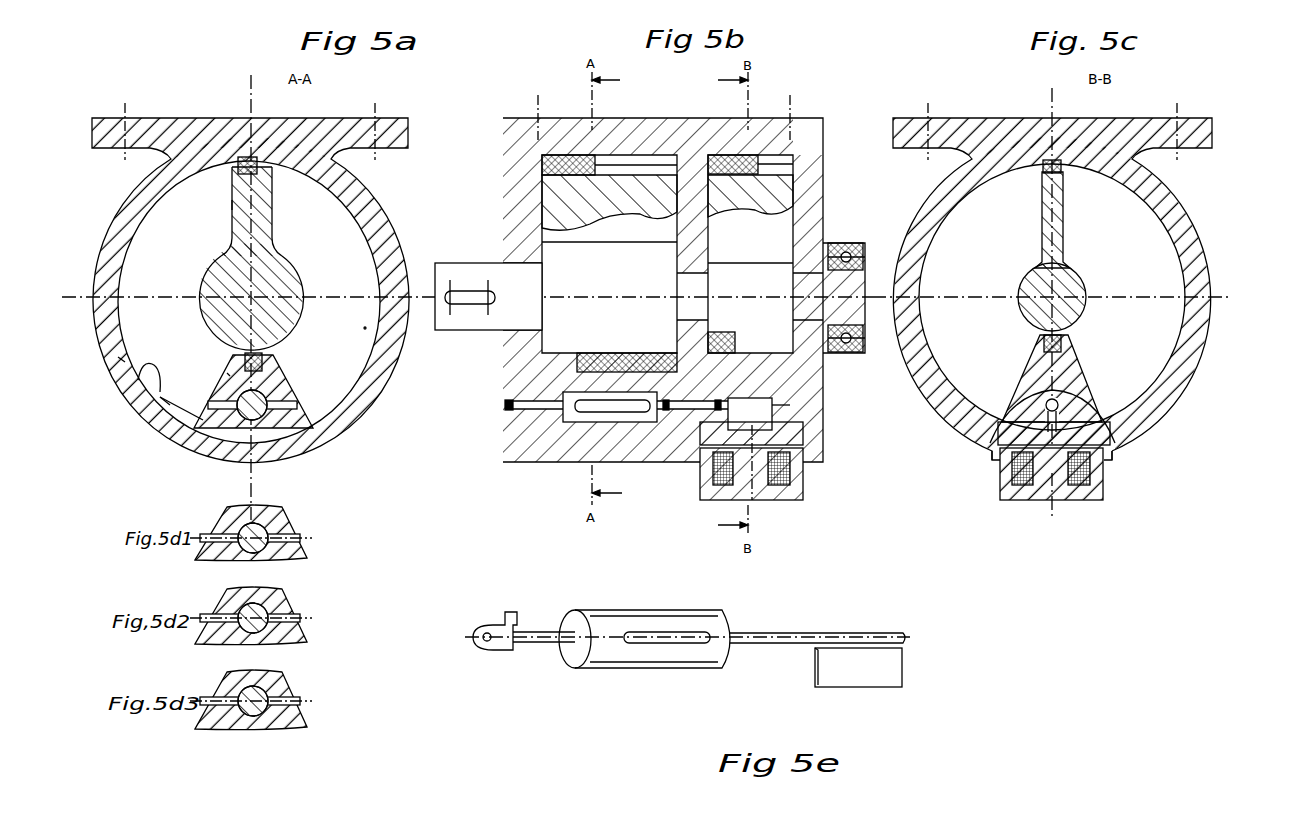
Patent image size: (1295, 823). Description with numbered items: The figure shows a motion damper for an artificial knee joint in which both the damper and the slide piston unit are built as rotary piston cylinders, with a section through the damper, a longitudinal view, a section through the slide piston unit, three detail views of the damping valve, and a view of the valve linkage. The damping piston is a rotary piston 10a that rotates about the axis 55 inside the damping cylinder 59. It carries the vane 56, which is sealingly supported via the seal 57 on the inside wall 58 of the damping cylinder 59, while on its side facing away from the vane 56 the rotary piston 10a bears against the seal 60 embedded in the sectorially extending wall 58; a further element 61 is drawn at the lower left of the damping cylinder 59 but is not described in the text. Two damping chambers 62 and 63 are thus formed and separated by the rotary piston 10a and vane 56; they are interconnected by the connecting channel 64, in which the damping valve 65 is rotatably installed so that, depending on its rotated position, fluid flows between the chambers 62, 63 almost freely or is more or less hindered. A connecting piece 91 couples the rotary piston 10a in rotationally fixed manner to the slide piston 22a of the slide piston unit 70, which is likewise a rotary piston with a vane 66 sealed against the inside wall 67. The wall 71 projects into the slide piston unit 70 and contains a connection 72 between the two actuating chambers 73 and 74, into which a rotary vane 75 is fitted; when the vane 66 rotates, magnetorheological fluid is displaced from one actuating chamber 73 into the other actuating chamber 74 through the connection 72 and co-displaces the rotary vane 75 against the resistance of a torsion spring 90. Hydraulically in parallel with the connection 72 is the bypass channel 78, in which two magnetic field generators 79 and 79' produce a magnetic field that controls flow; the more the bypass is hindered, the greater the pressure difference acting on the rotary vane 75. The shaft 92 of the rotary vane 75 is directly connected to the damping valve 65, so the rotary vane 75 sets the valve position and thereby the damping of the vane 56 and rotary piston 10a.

In FIG. 5A, the rotary piston 10a is at (300, 272).
In FIG. 5A, the axis 55 is at (275, 365).
In FIG. 5A, the vane 56 is at (233, 205).
In FIG. 5A, the seal 57 is at (240, 160).
In FIG. 5A, the inside wall 58 is at (160, 398).
In FIG. 5A, the damping cylinder 59 is at (118, 357).
In FIG. 5A, the seal 60 is at (262, 372).
In FIG. 5A, the inlet channel 61 is at (227, 373).
In FIG. 5A, the damping chamber 62 is at (150, 243).
In FIG. 5A, the damping chamber 63 is at (365, 328).
In FIG. 5A, the connecting channel 64 is at (307, 423).
In FIG. 5A, the damping valve 65 is at (223, 437).
In FIG. 5B, the damping valve 65 is at (548, 430).
In FIG. 5D1, the damping valve 65 is at (268, 555).
In FIG. 5D2, the damping valve 65 is at (285, 640).
In FIG. 5D3, the damping valve 65 is at (268, 722).
In FIG. 5E, the damping valve 65 is at (618, 650).
In FIG. 5B, the connecting piece 91 is at (692, 270).
In FIG. 5B, the shaft 92 is at (690, 430).
In FIG. 5C, the shaft 92 is at (1010, 392).
In FIG. 5E, the shaft 92 is at (770, 633).
In FIG. 5C, the actuating chamber 73 is at (950, 240).
In FIG. 5C, the vane 66 is at (1063, 228).
In FIG. 5C, the inside wall 67 is at (1185, 270).
In FIG. 5C, the actuating chamber 74 is at (1155, 345).
In FIG. 5C, the slide piston 22a is at (1085, 355).
In FIG. 5C, the wall 71 is at (1060, 410).
In FIG. 5C, the rotary vane 75 is at (1110, 445).
In FIG. 5E, the rotary vane 75 is at (890, 668).
In FIG. 5C, the connection 72 is at (998, 448).
In FIG. 5C, the slide piston unit 70 is at (960, 483).
In FIG. 5C, the bypass channel 78 is at (1048, 500).
In FIG. 5C, the magnetic field generator 79 is at (995, 492).
In FIG. 5C, the magnetic field generator 79' is at (1132, 501).
In FIG. 5E, the torsion spring 90 is at (505, 612).